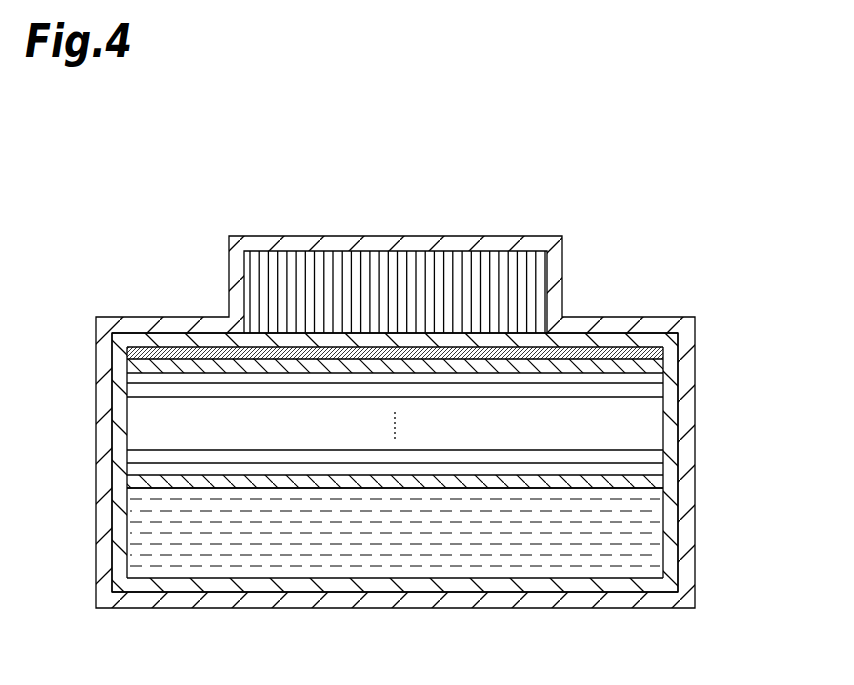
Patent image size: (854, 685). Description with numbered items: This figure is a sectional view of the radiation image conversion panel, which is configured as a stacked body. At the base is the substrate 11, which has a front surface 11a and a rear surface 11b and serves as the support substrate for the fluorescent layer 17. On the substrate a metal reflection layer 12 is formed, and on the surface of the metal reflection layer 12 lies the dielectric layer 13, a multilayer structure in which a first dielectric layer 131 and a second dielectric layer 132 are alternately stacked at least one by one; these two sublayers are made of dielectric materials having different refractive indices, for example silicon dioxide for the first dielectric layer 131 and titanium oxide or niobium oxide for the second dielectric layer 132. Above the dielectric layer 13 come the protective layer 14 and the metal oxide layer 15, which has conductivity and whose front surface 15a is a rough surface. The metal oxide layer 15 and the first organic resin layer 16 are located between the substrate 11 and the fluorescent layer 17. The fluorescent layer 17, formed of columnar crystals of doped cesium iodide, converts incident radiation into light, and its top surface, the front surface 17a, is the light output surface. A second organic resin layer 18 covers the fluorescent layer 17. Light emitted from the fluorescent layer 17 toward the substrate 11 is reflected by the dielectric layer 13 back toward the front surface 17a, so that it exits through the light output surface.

The substrate 11 is at (157, 553).
The front surface 11a is at (598, 488).
The rear surface 11b is at (512, 580).
The metal reflection layer 12 is at (208, 482).
The dielectric layer 13 is at (777, 382).
The first dielectric layer 131 is at (657, 390).
The second dielectric layer 132 is at (657, 378).
The protective layer 14 is at (660, 365).
The metal oxide layer 15 is at (637, 348).
The front surface 15a is at (660, 338).
The first organic resin layer 16 is at (591, 340).
The fluorescent layer 17 is at (462, 258).
The front surface 17a is at (510, 248).
The second organic resin layer 18 is at (312, 248).